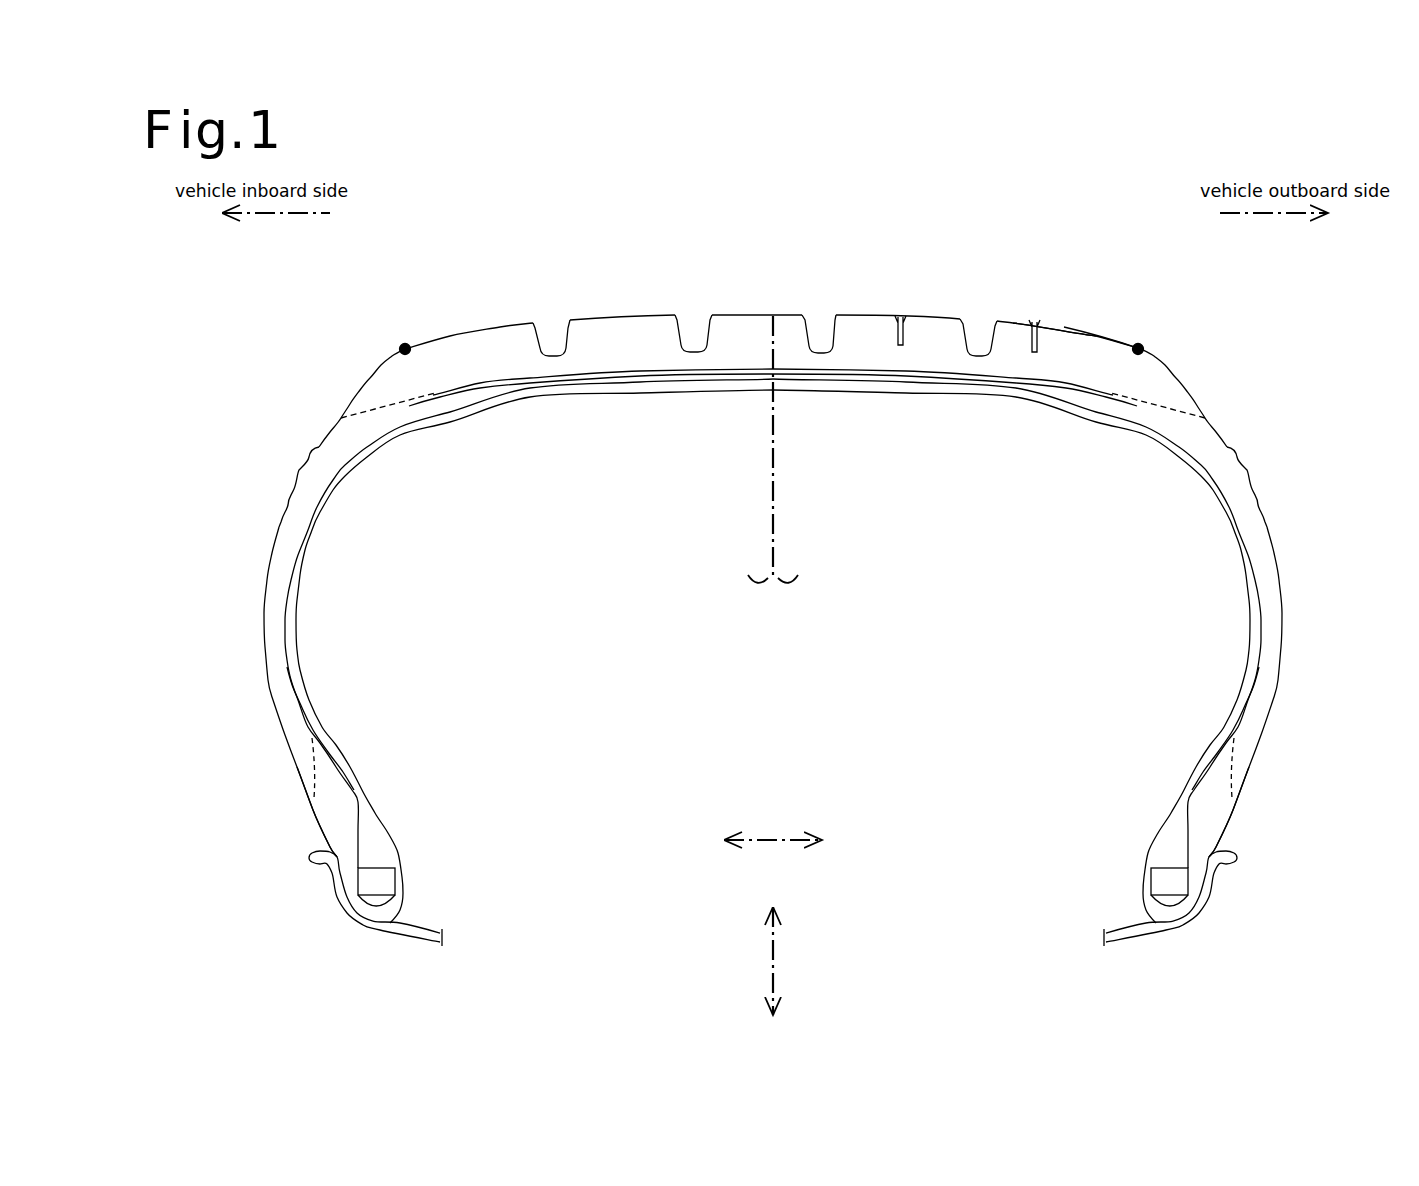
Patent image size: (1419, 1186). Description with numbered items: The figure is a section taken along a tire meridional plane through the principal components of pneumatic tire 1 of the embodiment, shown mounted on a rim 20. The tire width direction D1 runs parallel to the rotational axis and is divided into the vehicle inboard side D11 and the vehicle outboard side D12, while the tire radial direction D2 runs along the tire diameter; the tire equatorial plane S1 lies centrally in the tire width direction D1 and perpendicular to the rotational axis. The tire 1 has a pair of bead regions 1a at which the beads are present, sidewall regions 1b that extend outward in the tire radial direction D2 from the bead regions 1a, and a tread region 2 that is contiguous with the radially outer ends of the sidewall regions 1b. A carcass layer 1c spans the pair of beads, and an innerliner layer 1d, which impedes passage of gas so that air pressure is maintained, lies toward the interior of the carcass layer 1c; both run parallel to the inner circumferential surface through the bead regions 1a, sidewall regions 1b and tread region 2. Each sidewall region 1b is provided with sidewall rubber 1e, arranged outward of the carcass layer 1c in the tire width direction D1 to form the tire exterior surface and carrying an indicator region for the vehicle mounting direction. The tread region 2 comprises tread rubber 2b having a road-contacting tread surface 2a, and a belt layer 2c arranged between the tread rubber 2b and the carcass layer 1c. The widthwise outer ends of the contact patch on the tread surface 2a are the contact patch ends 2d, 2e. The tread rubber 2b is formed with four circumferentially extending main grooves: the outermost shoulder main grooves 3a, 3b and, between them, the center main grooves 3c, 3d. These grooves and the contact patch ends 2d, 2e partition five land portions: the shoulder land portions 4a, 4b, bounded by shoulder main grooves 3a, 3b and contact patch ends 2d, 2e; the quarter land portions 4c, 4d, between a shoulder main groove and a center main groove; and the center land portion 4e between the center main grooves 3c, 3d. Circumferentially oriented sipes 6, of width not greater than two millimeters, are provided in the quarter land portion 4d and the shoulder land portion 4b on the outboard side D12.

The pneumatic tire 1 is at (1230, 302).
The bead region 1a is at (308, 828).
The sidewall region 1b is at (268, 500).
The carcass layer 1c is at (530, 393).
The innerliner layer 1d is at (915, 396).
The sidewall rubber 1e is at (275, 590).
The tread region 2 is at (792, 286).
The tread surface 2a is at (1066, 327).
The tread rubber 2b is at (1075, 350).
The belt layer 2c is at (650, 380).
The contact patch end 2d is at (394, 348).
The contact patch end 2e is at (1154, 347).
The shoulder main groove 3a is at (556, 318).
The shoulder main groove 3b is at (977, 319).
The center main groove 3c is at (697, 315).
The center main groove 3d is at (818, 316).
The shoulder land portion 4a is at (492, 324).
The shoulder land portion 4b is at (1026, 321).
The quarter land portion 4c is at (632, 315).
The quarter land portion 4d is at (889, 315).
The center land portion 4e is at (762, 315).
The circumferentially oriented sipe 6 is at (902, 316).
The rim 20 is at (380, 933).
The tire equatorial plane S1 is at (776, 525).
The tire width direction D1 is at (773, 858).
The tire radial direction D2 is at (790, 961).
The first width direction side D11 is at (252, 215).
The second width direction side D12 is at (1295, 215).